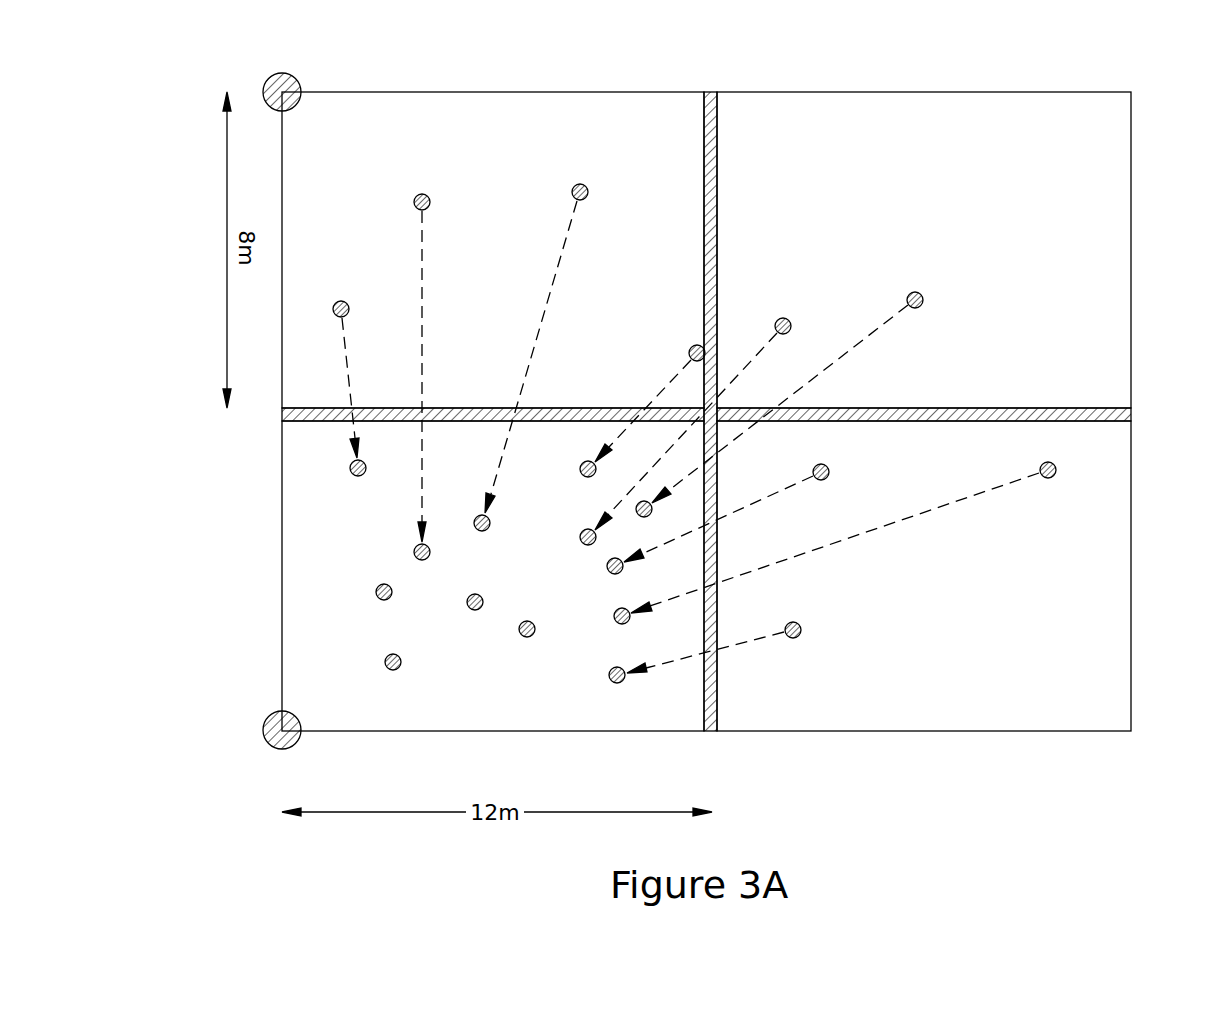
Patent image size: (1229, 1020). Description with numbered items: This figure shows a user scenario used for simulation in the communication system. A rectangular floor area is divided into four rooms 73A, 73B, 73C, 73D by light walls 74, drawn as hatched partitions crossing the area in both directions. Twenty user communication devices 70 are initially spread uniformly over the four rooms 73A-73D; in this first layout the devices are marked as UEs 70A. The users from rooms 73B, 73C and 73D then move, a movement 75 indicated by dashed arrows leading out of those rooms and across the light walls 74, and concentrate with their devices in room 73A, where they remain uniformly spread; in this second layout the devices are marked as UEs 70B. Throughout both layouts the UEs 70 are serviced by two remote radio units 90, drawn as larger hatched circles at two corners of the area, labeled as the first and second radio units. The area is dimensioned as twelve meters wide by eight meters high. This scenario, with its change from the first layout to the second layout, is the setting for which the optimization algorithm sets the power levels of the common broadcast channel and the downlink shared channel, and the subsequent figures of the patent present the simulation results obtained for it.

The user communication device 70 is at (377, 587).
The user communication device in initial layout 70A is at (414, 201).
The user communication device in second layout 70B is at (414, 552).
The room 73A is at (498, 713).
The room 73B is at (498, 144).
The room 73C is at (926, 713).
The room 73D is at (926, 144).
The light wall 74 is at (703, 118).
The movement 75 is at (553, 266).
The remote radio unit 90 is at (266, 78).